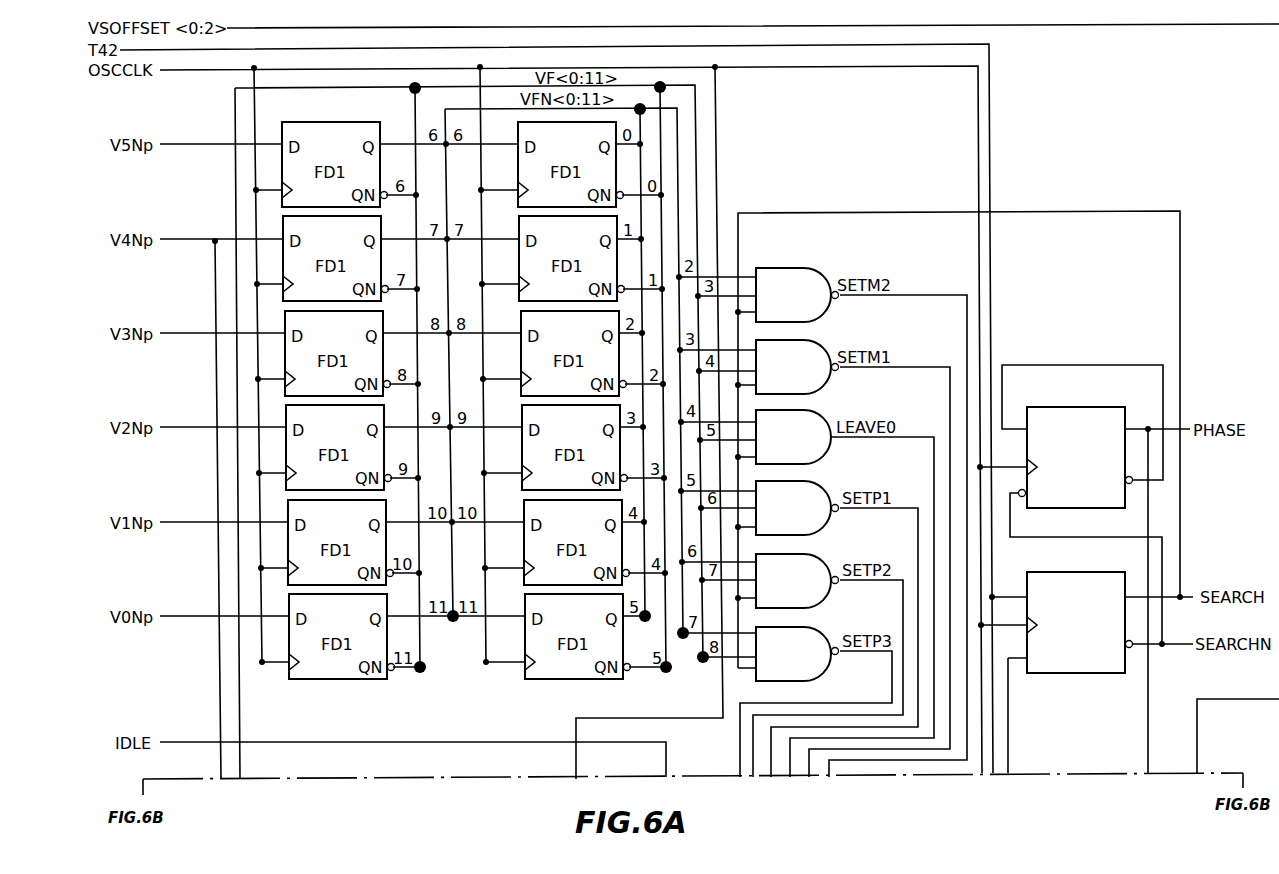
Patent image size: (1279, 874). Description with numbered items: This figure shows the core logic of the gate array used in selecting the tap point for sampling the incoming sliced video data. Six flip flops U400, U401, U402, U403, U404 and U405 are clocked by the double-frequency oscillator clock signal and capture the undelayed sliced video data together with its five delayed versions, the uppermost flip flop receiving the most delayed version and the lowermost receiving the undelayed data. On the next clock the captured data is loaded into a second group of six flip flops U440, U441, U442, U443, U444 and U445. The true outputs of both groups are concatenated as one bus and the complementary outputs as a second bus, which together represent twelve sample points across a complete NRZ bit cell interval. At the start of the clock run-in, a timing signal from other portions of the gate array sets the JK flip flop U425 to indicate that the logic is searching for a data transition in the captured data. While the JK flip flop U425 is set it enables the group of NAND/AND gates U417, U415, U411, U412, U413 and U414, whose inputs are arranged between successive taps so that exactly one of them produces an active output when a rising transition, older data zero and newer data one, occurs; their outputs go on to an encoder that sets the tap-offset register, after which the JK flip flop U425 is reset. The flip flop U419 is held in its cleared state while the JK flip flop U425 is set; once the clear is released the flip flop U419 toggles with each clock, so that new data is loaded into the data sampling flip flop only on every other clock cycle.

The flip flop U400 is at (335, 164).
The flip flop U401 is at (336, 258).
The flip flop U402 is at (338, 353).
The flip flop U403 is at (339, 447).
The flip flop U404 is at (341, 542).
The flip flop U405 is at (342, 636).
The flip flop U440 is at (571, 164).
The flip flop U441 is at (572, 258).
The flip flop U442 is at (574, 353).
The flip flop U443 is at (575, 447).
The flip flop U444 is at (577, 542).
The flip flop U445 is at (578, 636).
The NAND/AND gate U417 is at (797, 295).
The NAND/AND gate U415 is at (797, 367).
The NAND/AND gate U411 is at (793, 437).
The NAND/AND gate U412 is at (797, 508).
The NAND/AND gate U413 is at (797, 581).
The NAND/AND gate U414 is at (797, 654).
The flip flop U419 is at (1076, 457).
The JK flip flop U425 is at (1080, 622).